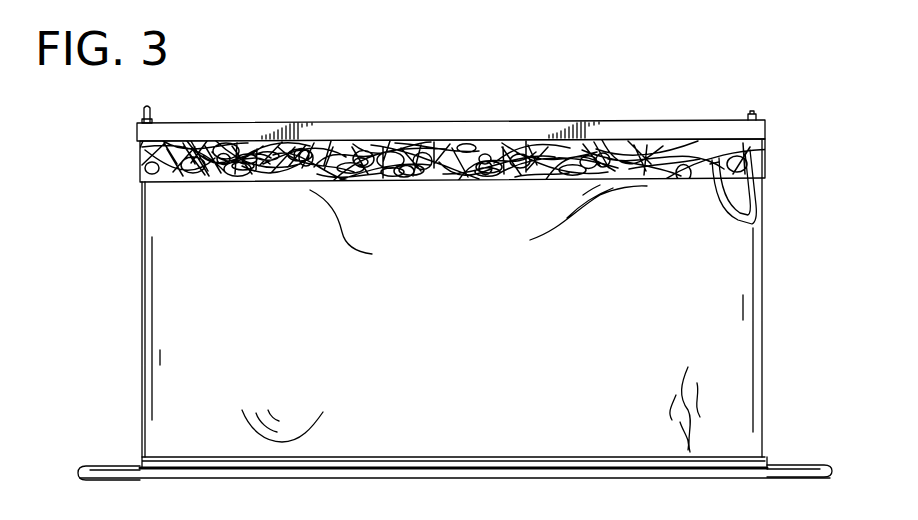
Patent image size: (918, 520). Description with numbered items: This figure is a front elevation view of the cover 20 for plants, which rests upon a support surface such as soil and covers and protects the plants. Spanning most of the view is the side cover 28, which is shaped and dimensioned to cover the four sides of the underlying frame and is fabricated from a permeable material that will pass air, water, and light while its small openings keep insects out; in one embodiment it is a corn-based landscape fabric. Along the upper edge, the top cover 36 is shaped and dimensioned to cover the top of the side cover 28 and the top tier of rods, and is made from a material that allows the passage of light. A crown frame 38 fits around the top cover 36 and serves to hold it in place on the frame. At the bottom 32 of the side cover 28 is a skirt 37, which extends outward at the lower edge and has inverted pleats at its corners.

The cover 20 is at (750, 74).
The side cover 28 is at (685, 312).
The bottom 32 is at (490, 464).
The top cover 36 is at (485, 178).
The skirt 37 is at (795, 466).
The crown frame 38 is at (474, 131).